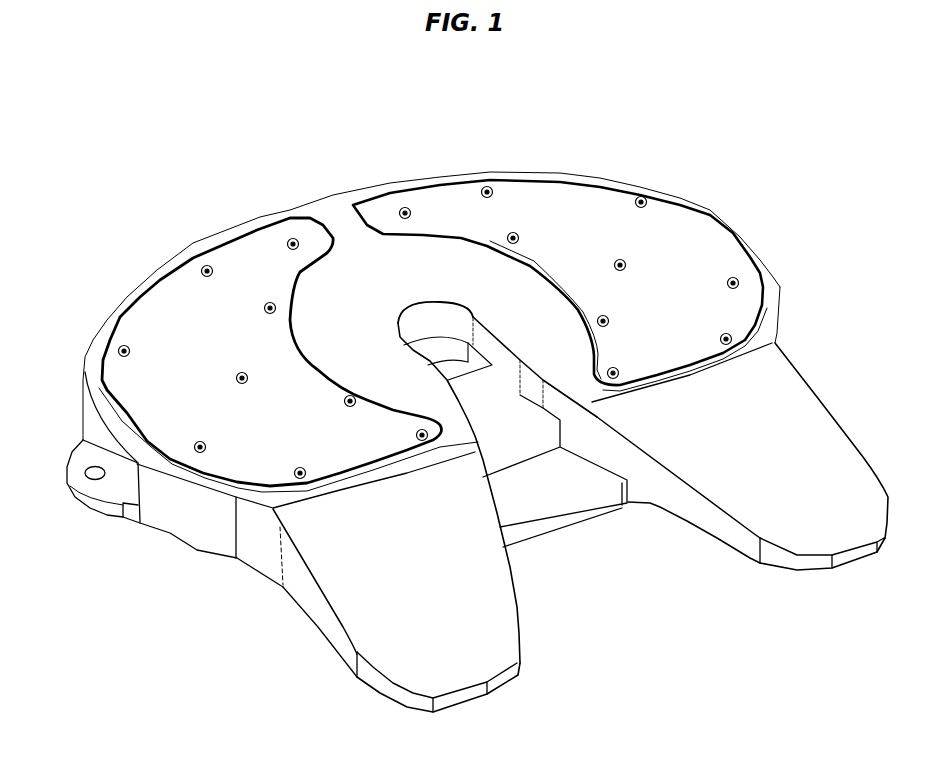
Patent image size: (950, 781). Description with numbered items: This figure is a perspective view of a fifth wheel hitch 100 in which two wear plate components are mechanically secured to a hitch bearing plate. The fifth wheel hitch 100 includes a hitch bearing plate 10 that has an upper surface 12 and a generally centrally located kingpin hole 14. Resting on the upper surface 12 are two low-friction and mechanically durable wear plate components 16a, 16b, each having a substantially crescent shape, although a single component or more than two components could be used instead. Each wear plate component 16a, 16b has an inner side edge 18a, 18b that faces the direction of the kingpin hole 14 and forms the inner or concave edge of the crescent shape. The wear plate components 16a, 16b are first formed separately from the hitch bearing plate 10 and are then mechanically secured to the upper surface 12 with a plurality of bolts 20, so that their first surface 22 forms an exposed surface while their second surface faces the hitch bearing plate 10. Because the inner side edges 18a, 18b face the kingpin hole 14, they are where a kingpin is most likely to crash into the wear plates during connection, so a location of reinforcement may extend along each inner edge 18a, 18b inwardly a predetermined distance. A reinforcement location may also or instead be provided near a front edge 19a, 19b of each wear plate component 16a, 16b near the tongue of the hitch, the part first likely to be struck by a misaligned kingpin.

The fifth wheel hitch 100 is at (103, 172).
The hitch bearing plate 10 is at (135, 500).
The upper surface 12 is at (336, 200).
The kingpin hole 14 is at (436, 313).
The wear plate component 16a is at (197, 520).
The wear plate component 16b is at (764, 297).
The inner side edge 18a is at (312, 352).
The inner side edge 18b is at (541, 272).
The front edge 19a is at (350, 468).
The front edge 19b is at (690, 365).
The bolts 20 is at (100, 310).
The first surface 22 is at (147, 310).